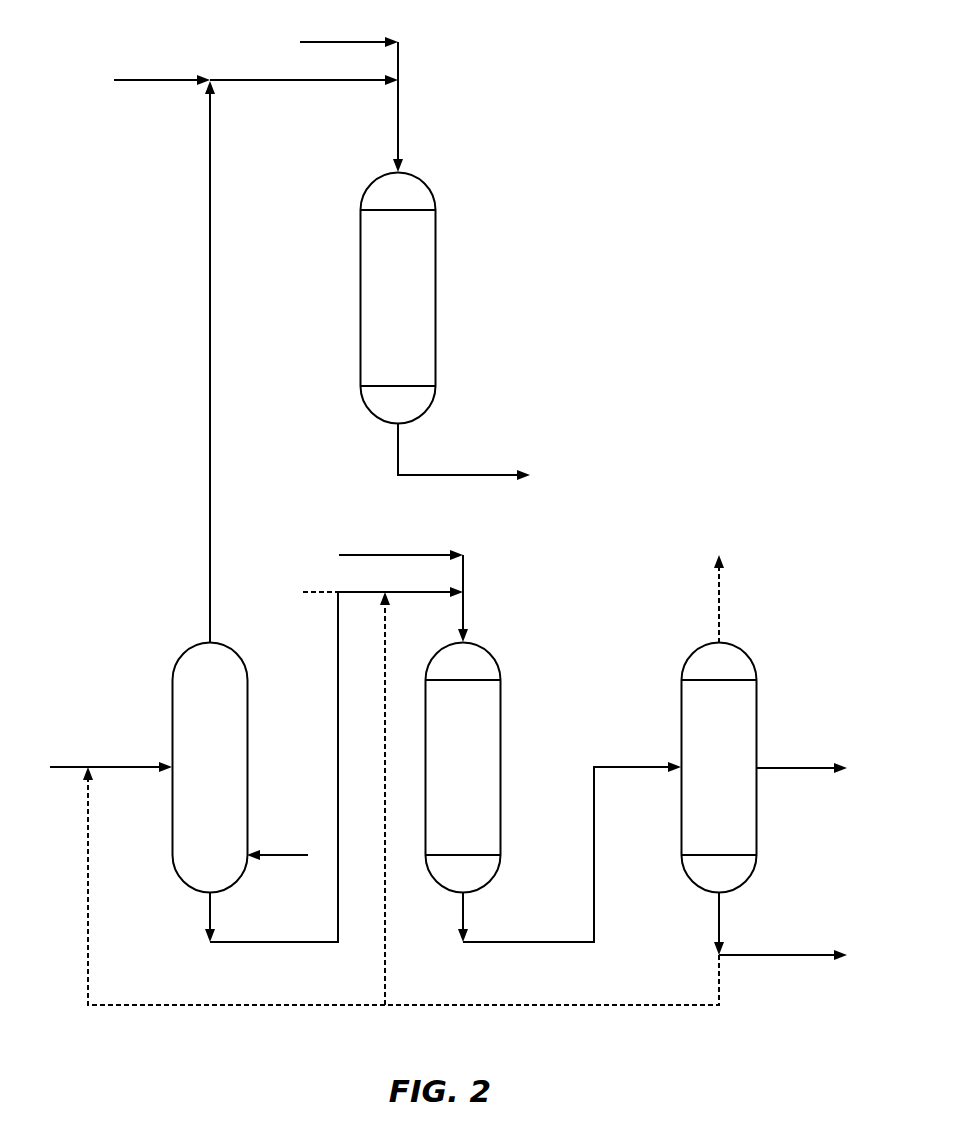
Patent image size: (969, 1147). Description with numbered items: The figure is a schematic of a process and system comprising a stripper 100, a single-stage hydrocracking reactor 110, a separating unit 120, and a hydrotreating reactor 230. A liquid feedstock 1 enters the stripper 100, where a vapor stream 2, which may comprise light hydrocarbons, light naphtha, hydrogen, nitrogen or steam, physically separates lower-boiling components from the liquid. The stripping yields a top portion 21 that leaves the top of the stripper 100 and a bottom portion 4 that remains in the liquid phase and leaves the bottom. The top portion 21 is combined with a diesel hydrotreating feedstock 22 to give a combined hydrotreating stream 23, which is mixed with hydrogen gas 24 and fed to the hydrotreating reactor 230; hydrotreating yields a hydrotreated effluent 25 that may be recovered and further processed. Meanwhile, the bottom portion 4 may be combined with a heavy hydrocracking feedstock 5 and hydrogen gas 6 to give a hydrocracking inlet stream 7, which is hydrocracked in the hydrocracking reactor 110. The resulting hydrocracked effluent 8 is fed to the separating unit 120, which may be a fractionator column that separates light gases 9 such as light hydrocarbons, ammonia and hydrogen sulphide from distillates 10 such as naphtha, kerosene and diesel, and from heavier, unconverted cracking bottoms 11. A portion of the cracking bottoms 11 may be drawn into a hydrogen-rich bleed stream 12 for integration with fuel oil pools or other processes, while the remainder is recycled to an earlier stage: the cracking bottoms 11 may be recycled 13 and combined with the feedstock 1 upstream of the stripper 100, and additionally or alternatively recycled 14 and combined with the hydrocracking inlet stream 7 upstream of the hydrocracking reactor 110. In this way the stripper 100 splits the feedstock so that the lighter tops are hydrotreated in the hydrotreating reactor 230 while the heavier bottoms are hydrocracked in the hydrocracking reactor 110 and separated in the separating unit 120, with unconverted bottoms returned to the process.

The feedstock 1 is at (66, 765).
The vapor stream 2 is at (292, 854).
The bottom portion 4 is at (209, 922).
The heavy hydrocracking feedstock 5 is at (309, 594).
The hydrogen gas 6 is at (395, 554).
The hydrocracking inlet stream 7 is at (464, 609).
The hydrocracked effluent 8 is at (531, 941).
The light gases 9 is at (719, 607).
The distillates 10 is at (804, 767).
The unconverted cracking bottoms 11 is at (717, 924).
The bleed stream 12 is at (788, 954).
The recycle stream 13 is at (272, 1004).
The recycle stream 14 is at (385, 950).
The top portion 21 is at (208, 608).
The diesel hydrotreating feedstock 22 is at (158, 79).
The combined hydrotreating stream 23 is at (291, 81).
The hydrogen gas 24 is at (351, 41).
The hydrotreated effluent 25 is at (497, 475).
The stripper 100 is at (188, 782).
The hydrocracking reactor 110 is at (443, 782).
The separating unit 120 is at (699, 782).
The hydrotreating reactor 230 is at (378, 313).